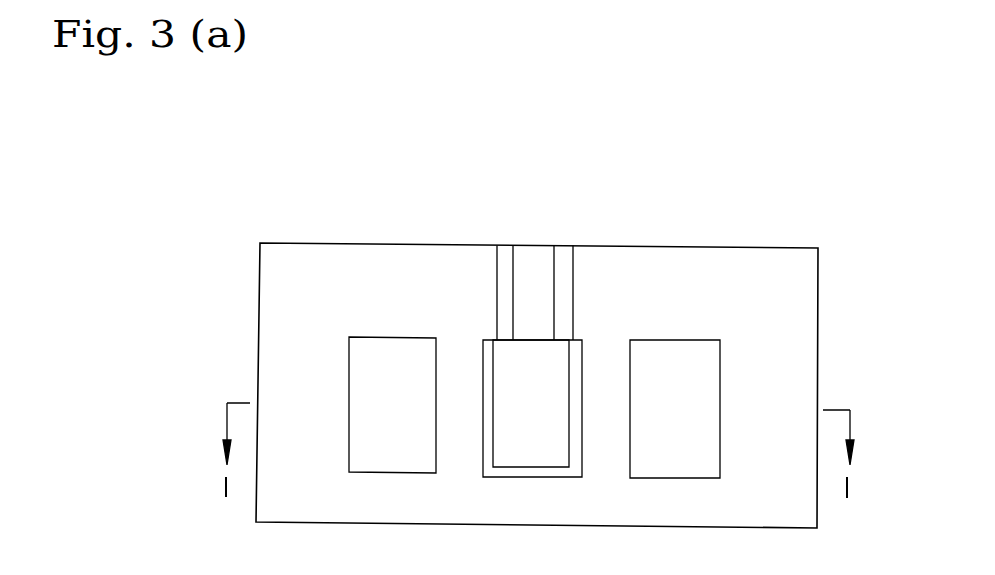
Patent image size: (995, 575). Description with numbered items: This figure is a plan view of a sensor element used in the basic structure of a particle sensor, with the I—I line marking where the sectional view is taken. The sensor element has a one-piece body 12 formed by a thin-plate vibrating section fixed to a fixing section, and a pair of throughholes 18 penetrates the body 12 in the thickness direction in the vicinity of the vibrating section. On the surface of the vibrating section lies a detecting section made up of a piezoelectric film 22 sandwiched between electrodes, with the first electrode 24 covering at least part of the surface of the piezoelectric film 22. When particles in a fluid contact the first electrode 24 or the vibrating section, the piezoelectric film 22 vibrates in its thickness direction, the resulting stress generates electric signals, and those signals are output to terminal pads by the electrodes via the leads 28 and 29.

The body 12 is at (712, 261).
The throughholes 18 is at (718, 402).
The piezoelectric film 22 is at (485, 342).
The first electrode 24 is at (531, 353).
The lead 28 is at (503, 262).
The lead 29 is at (562, 262).